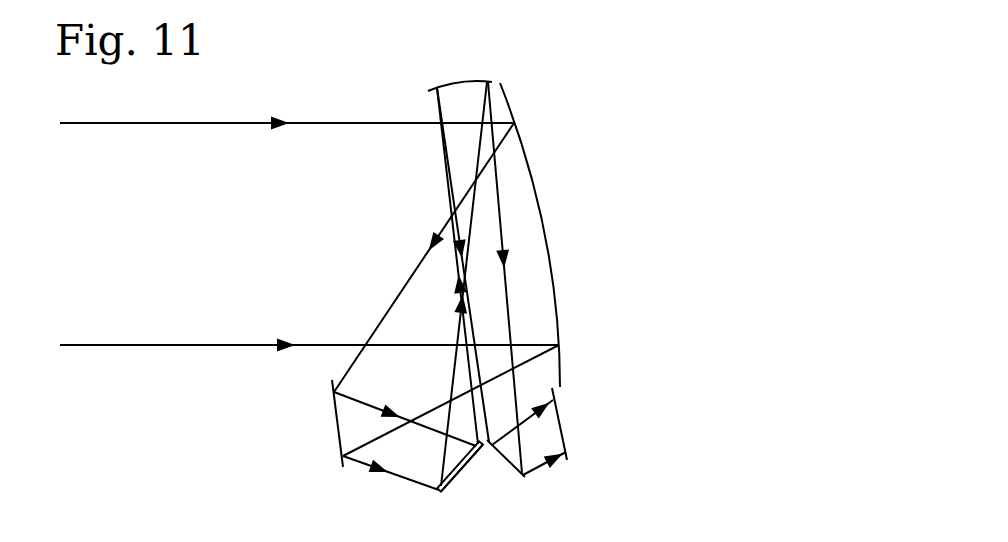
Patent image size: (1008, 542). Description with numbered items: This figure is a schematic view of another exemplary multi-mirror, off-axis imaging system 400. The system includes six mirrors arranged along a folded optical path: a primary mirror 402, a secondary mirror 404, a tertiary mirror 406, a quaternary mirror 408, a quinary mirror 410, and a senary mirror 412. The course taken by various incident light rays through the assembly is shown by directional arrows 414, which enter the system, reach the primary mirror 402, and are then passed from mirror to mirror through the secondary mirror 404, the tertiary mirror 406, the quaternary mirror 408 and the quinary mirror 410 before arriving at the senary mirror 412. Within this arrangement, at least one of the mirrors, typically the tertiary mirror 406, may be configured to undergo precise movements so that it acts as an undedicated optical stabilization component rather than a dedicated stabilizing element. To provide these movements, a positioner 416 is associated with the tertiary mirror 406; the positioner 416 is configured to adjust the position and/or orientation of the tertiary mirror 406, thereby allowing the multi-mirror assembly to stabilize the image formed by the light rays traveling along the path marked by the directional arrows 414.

The multi-mirror off-axis imaging system 400 is at (680, 60).
The primary mirror 402 is at (548, 236).
The secondary mirror 404 is at (333, 415).
The tertiary mirror 406 is at (440, 495).
The quaternary mirror 408 is at (467, 78).
The quinary mirror 410 is at (510, 474).
The senary mirror 412 is at (562, 420).
The directional arrows 414 is at (303, 121).
The positioner 416 is at (465, 473).